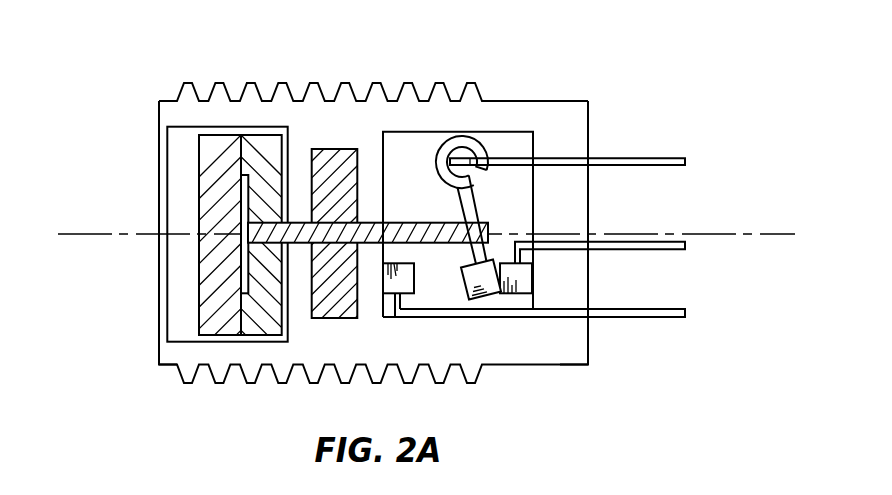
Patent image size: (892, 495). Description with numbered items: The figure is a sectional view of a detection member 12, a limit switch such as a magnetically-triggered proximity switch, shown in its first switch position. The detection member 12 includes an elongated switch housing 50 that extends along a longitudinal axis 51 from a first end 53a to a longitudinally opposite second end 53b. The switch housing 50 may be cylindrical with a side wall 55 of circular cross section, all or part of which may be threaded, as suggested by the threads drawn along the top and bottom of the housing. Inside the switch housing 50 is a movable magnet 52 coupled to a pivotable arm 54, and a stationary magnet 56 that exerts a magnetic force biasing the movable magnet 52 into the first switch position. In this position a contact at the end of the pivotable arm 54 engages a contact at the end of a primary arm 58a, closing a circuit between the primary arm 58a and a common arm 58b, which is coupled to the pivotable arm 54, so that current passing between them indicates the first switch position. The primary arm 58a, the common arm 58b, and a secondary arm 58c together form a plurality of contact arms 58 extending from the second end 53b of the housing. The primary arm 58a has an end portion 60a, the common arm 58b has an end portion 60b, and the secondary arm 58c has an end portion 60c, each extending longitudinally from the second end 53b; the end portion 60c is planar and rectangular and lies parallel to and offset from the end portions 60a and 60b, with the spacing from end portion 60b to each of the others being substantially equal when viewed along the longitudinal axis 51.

The detection member 12 is at (141, 80).
The switch housing 50 is at (513, 100).
The longitudinal axis 51 is at (89, 232).
The movable magnet 52 is at (213, 275).
The first end 53a is at (168, 365).
The second end 53b is at (573, 365).
The pivotable arm 54 is at (457, 202).
The side wall 55 is at (231, 95).
The stationary magnet 56 is at (328, 172).
The plurality of contact arms 58 is at (574, 185).
The primary arm 58a is at (662, 242).
The common arm 58b is at (662, 158).
The secondary arm 58c is at (662, 310).
The end portion 60a is at (613, 251).
The end portion 60b is at (613, 167).
The end portion 60c is at (613, 318).